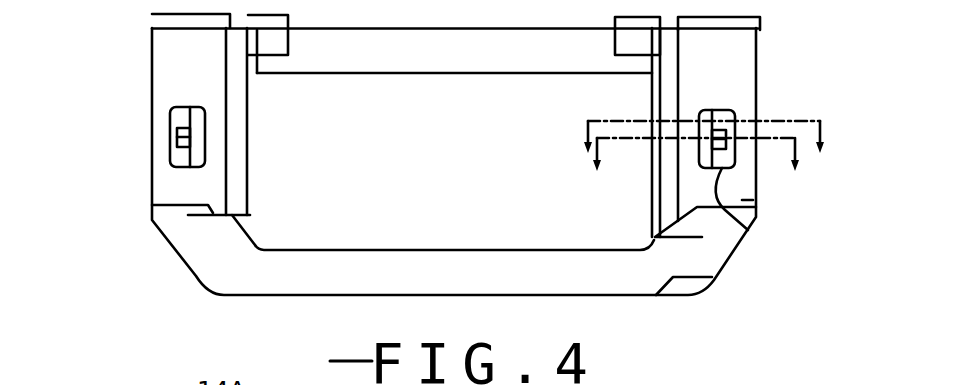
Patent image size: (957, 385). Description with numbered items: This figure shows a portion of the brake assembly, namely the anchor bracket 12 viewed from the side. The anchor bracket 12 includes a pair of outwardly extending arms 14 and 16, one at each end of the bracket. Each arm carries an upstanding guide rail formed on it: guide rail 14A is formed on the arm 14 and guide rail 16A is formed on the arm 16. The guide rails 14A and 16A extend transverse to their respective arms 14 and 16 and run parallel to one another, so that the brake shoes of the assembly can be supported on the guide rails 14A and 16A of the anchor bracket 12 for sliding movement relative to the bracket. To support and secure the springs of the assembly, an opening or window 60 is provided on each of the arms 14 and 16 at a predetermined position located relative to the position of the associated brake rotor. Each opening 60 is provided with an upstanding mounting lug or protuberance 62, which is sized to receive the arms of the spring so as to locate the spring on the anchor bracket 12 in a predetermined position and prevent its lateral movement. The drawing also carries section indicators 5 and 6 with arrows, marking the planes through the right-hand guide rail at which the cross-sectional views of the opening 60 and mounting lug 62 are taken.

The anchor bracket 12 is at (158, 260).
The guide rail 16A is at (167, 62).
The arm 16 is at (158, 141).
The guide rail 14A is at (738, 67).
The mounting lug 62 is at (733, 165).
The opening 60 is at (748, 230).
The arm 14 is at (742, 200).
The section line 6- 6 is at (703, 124).
The section line 5- 5 is at (696, 167).